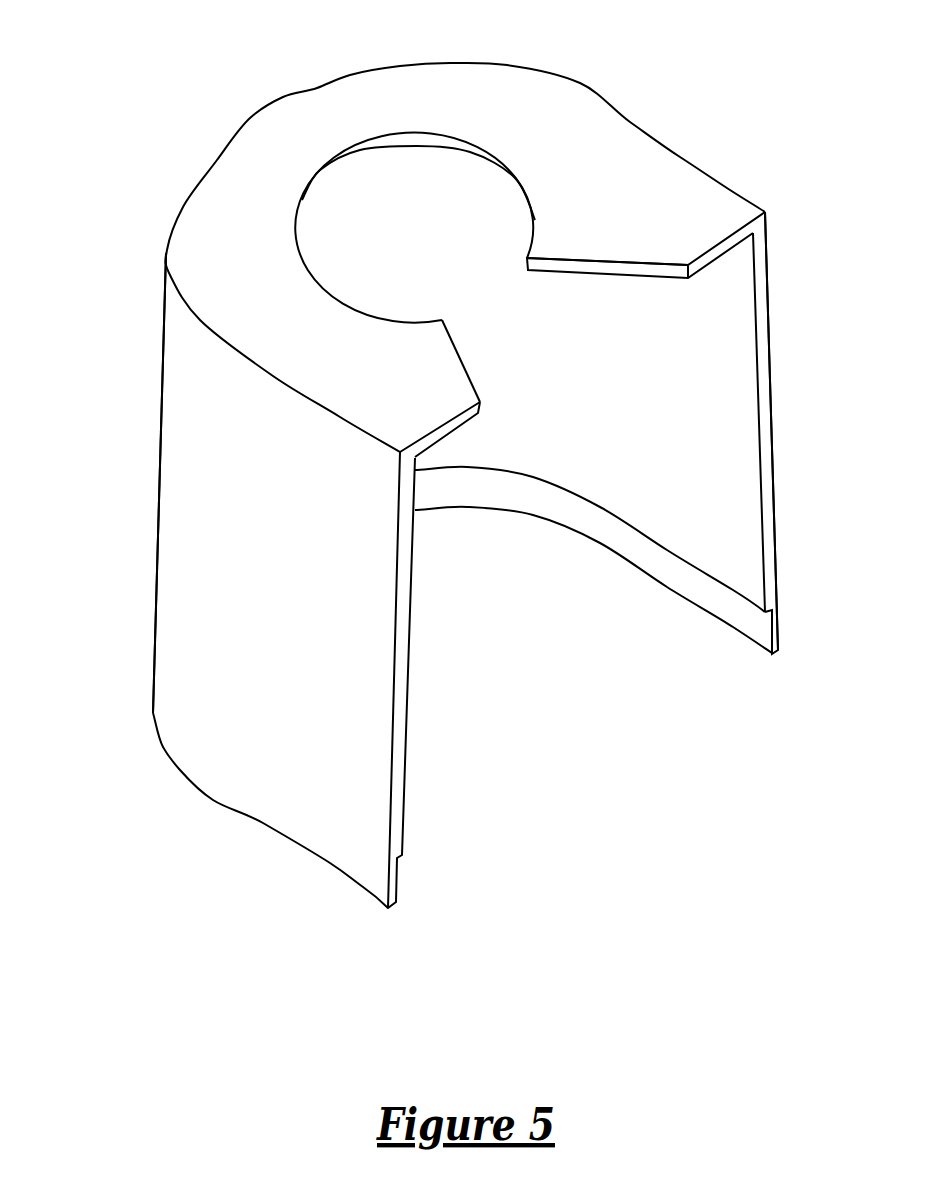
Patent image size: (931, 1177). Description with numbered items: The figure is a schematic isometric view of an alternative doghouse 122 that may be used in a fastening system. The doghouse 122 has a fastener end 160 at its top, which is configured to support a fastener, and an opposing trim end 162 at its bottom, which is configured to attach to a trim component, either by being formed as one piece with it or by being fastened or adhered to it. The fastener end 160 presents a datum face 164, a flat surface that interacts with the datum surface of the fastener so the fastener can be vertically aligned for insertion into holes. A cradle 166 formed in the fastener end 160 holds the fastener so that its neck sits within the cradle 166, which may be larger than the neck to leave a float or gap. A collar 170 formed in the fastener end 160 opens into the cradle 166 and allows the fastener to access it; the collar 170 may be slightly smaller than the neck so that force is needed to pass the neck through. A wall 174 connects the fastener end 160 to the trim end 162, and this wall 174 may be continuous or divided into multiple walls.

The doghouse 122 is at (800, 119).
The fastener end 160 is at (95, 202).
The trim end 162 is at (100, 713).
The datum face 164 is at (243, 187).
The cradle 166 is at (454, 140).
The collar 170 is at (442, 318).
The wall 174 is at (215, 597).